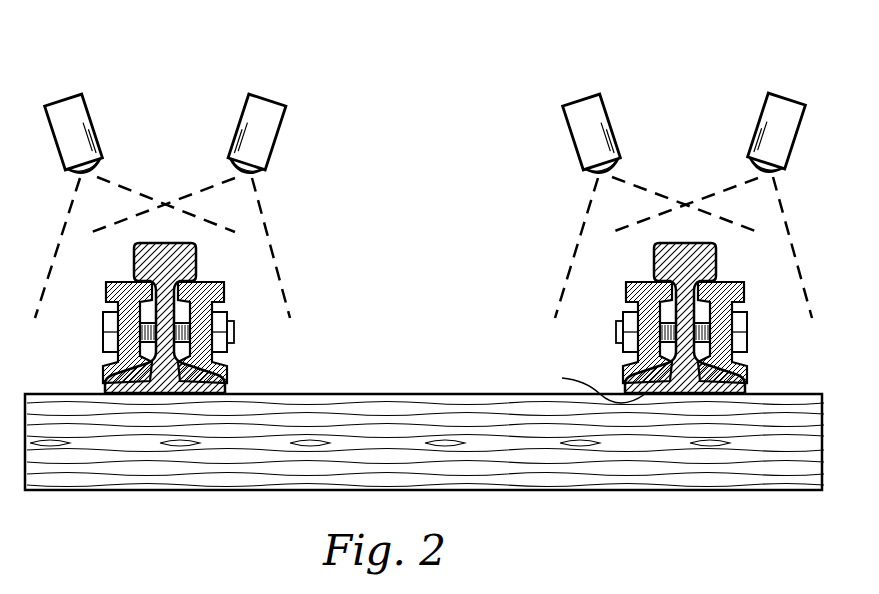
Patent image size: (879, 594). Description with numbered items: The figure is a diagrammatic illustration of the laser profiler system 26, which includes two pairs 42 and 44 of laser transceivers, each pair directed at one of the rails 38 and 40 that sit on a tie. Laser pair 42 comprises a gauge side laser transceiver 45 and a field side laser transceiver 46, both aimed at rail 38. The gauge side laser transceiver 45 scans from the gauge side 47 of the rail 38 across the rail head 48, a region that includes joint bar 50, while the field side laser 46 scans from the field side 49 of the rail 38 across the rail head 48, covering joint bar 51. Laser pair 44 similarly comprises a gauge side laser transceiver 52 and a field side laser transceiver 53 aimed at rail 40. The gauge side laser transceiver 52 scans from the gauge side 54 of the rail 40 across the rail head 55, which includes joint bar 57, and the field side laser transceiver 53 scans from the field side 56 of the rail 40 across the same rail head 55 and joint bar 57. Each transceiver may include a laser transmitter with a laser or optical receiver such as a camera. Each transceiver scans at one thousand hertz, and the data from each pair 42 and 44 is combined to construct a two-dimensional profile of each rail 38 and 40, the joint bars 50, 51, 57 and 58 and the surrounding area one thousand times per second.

The laser profiler system 26 is at (674, 169).
The rail 38 is at (587, 383).
The rail 40 is at (198, 395).
The laser pair 42 is at (671, 175).
The laser pair 44 is at (183, 175).
The gauge side laser transceiver 45 is at (600, 110).
The field side laser transceiver 46 is at (758, 146).
The gauge side 47 is at (582, 250).
The rail head 48 is at (702, 318).
The field side 49 is at (785, 233).
The joint bar 50 is at (620, 332).
The joint bar 51 is at (756, 332).
The gauge side laser transceiver 52 is at (280, 127).
The field side laser transceiver 53 is at (66, 104).
The gauge side 54 is at (279, 270).
The rail head 55 is at (133, 253).
The sensor field of view 56 is at (70, 232).
The joint bar 57 is at (219, 313).
The joint bar 58 is at (117, 327).